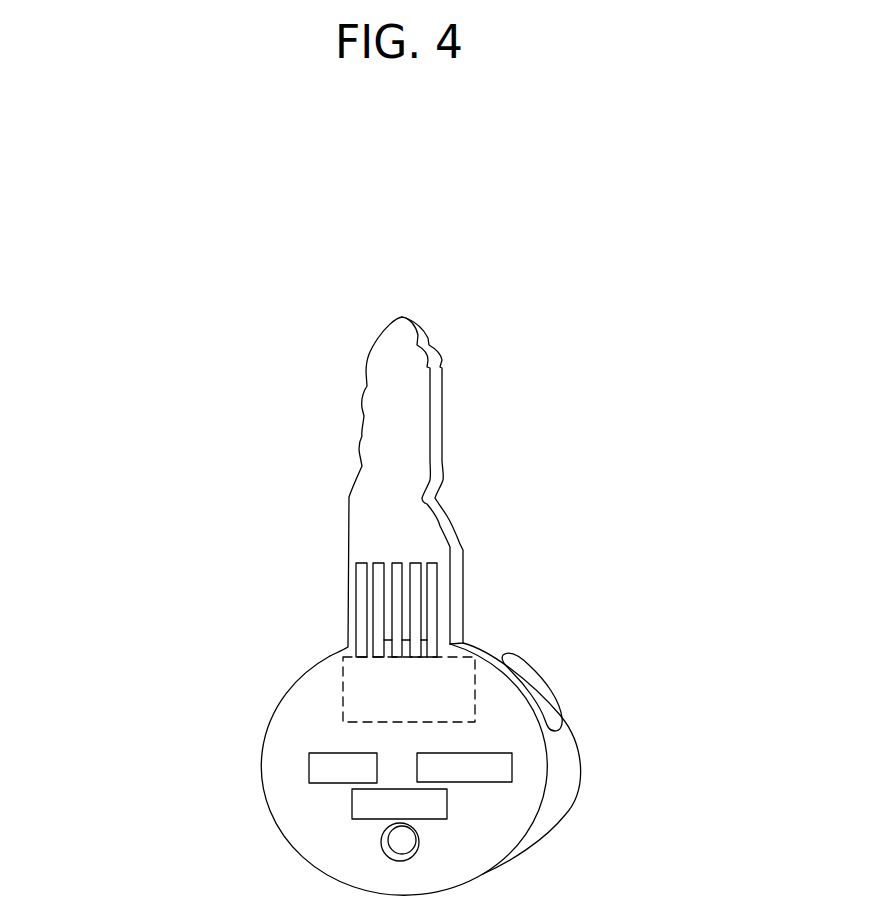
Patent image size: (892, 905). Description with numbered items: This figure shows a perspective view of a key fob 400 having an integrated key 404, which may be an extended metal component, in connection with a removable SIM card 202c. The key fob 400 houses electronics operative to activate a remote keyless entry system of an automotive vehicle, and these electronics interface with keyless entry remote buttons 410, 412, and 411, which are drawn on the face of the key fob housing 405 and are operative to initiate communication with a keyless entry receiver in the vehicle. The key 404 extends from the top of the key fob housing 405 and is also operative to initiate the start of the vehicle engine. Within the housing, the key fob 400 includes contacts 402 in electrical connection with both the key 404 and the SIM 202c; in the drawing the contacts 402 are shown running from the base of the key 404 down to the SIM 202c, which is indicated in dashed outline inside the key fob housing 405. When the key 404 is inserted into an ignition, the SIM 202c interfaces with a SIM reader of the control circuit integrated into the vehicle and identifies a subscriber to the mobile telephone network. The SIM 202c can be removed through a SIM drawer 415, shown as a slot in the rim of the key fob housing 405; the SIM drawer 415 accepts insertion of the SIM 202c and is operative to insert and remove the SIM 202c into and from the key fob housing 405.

The key fob 400 is at (275, 417).
The key 404 is at (443, 410).
The key fob housing 405 is at (268, 720).
The SIM drawer 415 is at (533, 683).
The contacts 402 is at (427, 563).
The SIM card 202c is at (342, 692).
The keyless entry remote button 411 is at (309, 762).
The keyless entry remote button 410 is at (512, 768).
The keyless entry remote button 412 is at (447, 808).